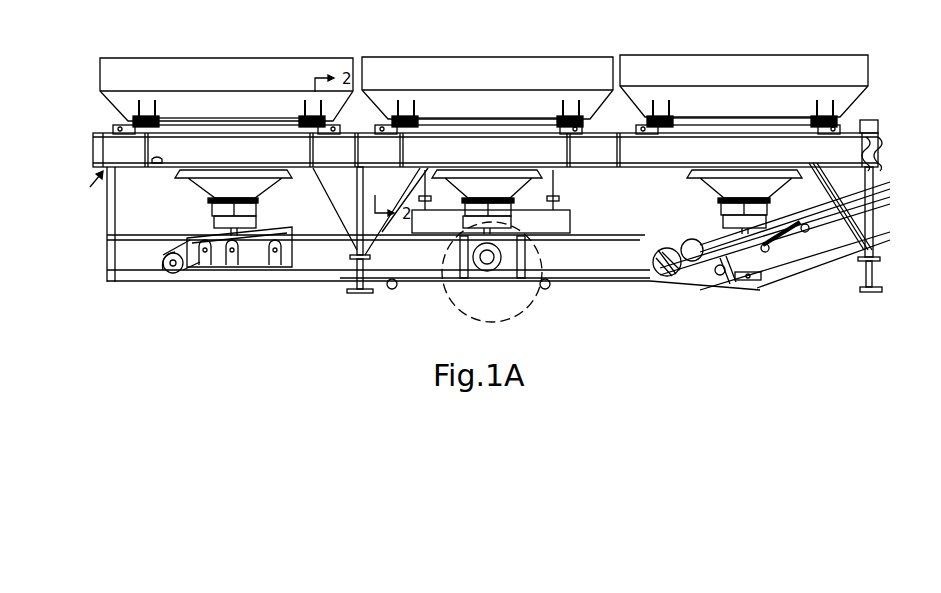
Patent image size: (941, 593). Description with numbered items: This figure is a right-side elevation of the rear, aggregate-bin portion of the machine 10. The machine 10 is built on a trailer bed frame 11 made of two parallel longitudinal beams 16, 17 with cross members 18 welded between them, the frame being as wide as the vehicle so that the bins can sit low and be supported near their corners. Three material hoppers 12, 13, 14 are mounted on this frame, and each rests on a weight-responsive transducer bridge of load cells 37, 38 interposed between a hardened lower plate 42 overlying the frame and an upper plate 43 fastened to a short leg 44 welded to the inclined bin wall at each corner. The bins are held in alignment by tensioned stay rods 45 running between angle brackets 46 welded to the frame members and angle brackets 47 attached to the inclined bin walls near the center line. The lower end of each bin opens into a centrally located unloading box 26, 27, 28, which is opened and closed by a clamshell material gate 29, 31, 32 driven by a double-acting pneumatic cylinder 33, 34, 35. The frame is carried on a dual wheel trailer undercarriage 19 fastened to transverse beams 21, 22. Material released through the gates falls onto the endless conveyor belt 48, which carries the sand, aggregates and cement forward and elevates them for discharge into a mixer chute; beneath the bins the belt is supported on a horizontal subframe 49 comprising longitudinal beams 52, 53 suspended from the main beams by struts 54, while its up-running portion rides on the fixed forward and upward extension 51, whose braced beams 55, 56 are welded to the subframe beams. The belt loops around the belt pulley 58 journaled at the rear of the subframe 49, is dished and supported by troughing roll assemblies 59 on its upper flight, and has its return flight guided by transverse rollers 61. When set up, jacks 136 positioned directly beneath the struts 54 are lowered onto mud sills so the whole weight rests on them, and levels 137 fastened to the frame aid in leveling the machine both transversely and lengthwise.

The machine 10 is at (86, 183).
The trailer bed frame 11 is at (874, 152).
The material hopper 12 is at (235, 61).
The material hopper 13 is at (494, 61).
The material hopper 14 is at (691, 61).
The longitudinal beam 16 is at (874, 130).
The longitudinal beam 17 is at (813, 168).
The cross member 18 is at (95, 148).
The dual wheel trailer undercarriage 19 is at (572, 222).
The transverse beam 21 is at (554, 179).
The transverse beam 22 is at (410, 180).
The unloading box 26 is at (209, 204).
The unloading box 27 is at (462, 208).
The unloading box 28 is at (722, 203).
The clamshell material gate 29 is at (211, 221).
The clamshell material gate 31 is at (462, 223).
The clamshell material gate 32 is at (726, 222).
The double-acting pneumatic cylinder 33 is at (256, 204).
The double-acting pneumatic cylinder 34 is at (513, 208).
The double-acting pneumatic cylinder 35 is at (767, 203).
The load cell 37 is at (131, 119).
The load cell 38 is at (323, 116).
The lower plate 42 is at (302, 114).
The upper plate 43 is at (307, 136).
The short leg 44 is at (158, 112).
The stay rod 45 is at (331, 136).
The angle bracket 46 is at (120, 136).
The angle bracket 47 is at (642, 136).
The endless conveyor belt 48 is at (763, 280).
The horizontal subframe 49 is at (127, 282).
The forward and upward extension 51 is at (888, 190).
The longitudinal beam 52 is at (162, 280).
The longitudinal beam 53 is at (246, 276).
The strut 54 is at (893, 237).
The braced beam 55 is at (893, 221).
The braced beam 56 is at (893, 205).
The belt pulley 58 is at (191, 280).
The troughing roll assembly 59 is at (806, 228).
The transverse roller 61 is at (544, 285).
The jack 136 is at (357, 282).
The level 137 is at (161, 163).